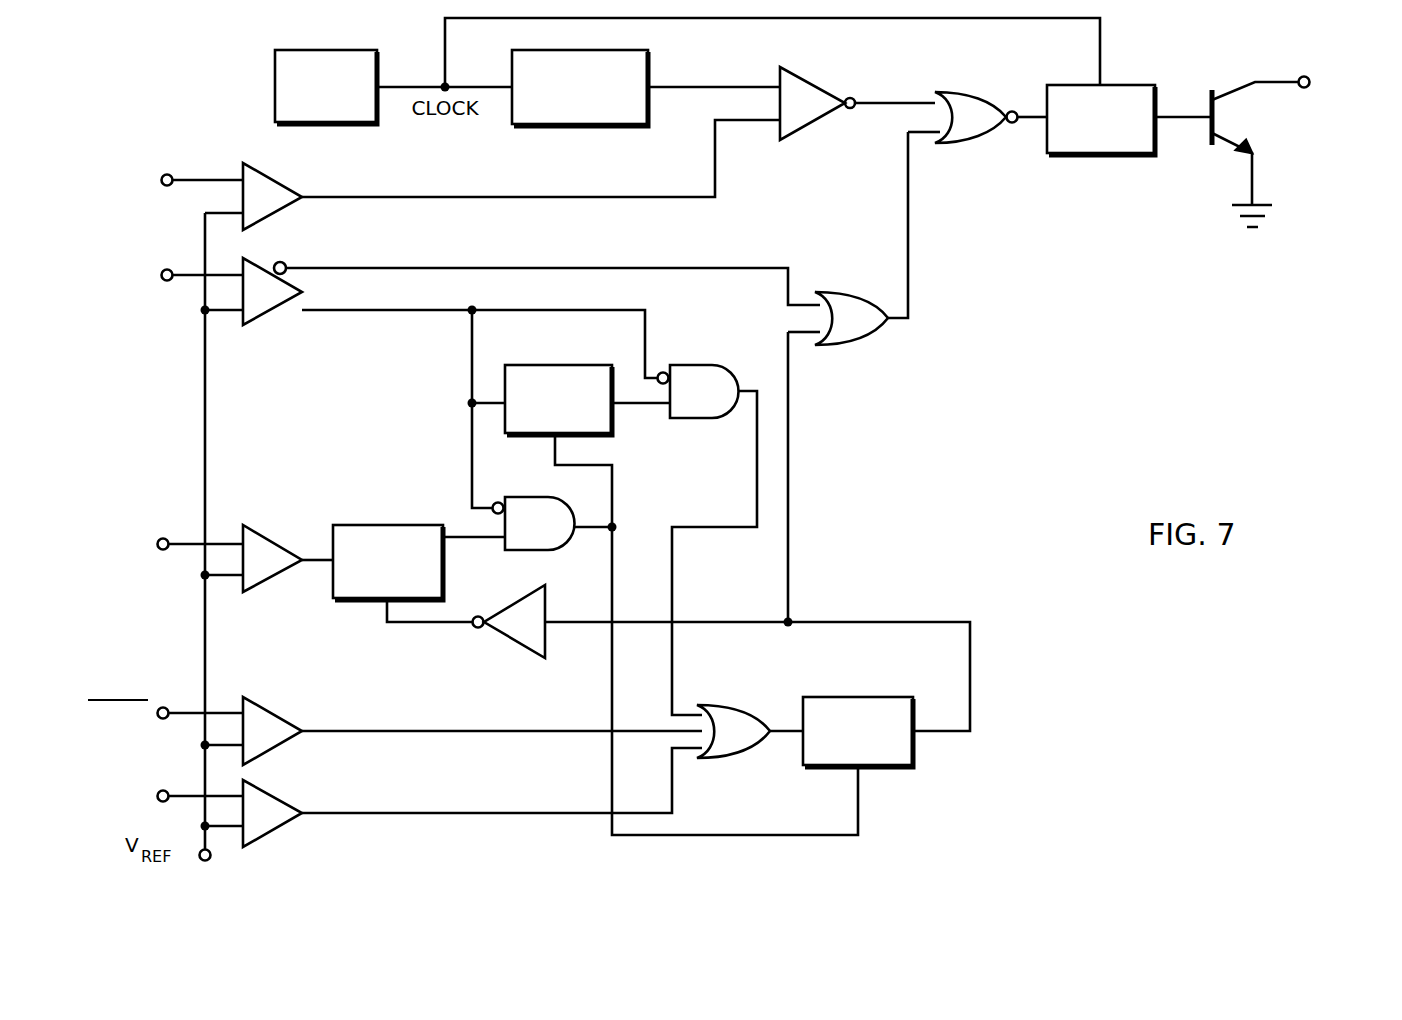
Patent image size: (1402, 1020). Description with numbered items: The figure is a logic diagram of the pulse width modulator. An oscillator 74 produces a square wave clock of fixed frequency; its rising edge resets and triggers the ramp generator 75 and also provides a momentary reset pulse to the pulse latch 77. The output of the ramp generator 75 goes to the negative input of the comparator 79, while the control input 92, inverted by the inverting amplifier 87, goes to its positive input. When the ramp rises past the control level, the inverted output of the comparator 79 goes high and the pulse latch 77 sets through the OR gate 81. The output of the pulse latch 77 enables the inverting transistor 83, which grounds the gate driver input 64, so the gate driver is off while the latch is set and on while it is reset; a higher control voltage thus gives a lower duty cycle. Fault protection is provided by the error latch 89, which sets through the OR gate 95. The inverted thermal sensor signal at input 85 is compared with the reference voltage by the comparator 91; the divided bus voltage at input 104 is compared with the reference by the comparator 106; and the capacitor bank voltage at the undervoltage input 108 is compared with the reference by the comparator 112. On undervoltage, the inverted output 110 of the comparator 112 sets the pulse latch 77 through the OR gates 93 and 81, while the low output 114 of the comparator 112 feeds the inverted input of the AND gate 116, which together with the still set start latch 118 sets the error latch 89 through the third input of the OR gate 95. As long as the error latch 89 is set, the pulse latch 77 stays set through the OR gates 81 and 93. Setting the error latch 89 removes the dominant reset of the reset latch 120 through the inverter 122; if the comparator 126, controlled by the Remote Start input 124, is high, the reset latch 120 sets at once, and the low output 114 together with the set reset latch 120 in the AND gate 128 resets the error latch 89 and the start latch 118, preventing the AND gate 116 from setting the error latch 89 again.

The oscillator 74 is at (306, 55).
The ramp generator 75 is at (535, 117).
The comparator 79 is at (808, 122).
The OR gate 81 is at (947, 135).
The pulse latch 77 is at (1062, 148).
The inverting transistor 83 is at (1232, 105).
The gate driver input 64 is at (1306, 88).
The control input 92 is at (167, 174).
The inverting amplifier 87 is at (265, 180).
The inverted output of comparator 110 is at (320, 268).
The undervoltage input 108 is at (163, 281).
The comparator 112 is at (257, 321).
The output of comparator 114 is at (348, 312).
The start latch 118 is at (555, 370).
The AND gate 116 is at (688, 370).
The OR gate 93 is at (858, 332).
The Remote Start input 124 is at (163, 538).
The comparator 126 is at (260, 530).
The reset latch 120 is at (373, 530).
The AND gate 128 is at (550, 545).
The inverter 122 is at (500, 633).
The input 85 is at (165, 707).
The comparator 91 is at (260, 750).
The input 104 is at (162, 790).
The comparator 106 is at (262, 838).
The OR gate 95 is at (722, 706).
The error latch 89 is at (870, 702).